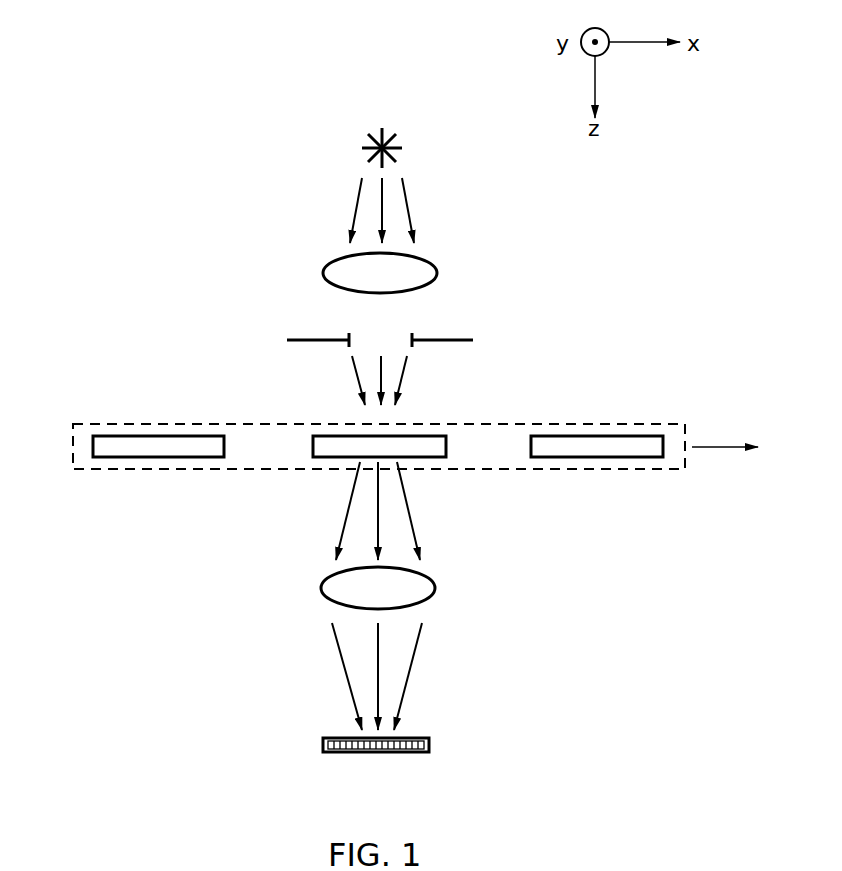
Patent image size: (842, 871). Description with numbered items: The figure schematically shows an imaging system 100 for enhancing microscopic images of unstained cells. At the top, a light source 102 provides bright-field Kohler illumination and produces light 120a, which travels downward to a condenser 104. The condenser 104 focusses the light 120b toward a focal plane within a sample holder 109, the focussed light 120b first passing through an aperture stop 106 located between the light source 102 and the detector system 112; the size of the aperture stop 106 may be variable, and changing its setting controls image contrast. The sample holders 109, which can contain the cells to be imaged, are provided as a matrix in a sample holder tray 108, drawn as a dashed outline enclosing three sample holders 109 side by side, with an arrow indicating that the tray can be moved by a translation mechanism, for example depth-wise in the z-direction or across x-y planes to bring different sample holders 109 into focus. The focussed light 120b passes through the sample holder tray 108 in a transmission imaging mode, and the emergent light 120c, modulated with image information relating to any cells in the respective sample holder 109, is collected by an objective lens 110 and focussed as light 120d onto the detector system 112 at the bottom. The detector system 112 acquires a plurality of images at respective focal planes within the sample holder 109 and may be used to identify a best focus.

The imaging system 100 is at (153, 90).
The light source 102 is at (396, 142).
The condenser 104 is at (437, 272).
The aperture stop 106 is at (457, 338).
The sample holder tray 108 is at (415, 435).
The sample holder 109 is at (160, 458).
The objective lens 110 is at (436, 588).
The detector system 112 is at (394, 752).
The light 120a is at (320, 189).
The focussed light 120b is at (300, 370).
The emergent light 120c is at (323, 509).
The focussed light 120d is at (423, 690).